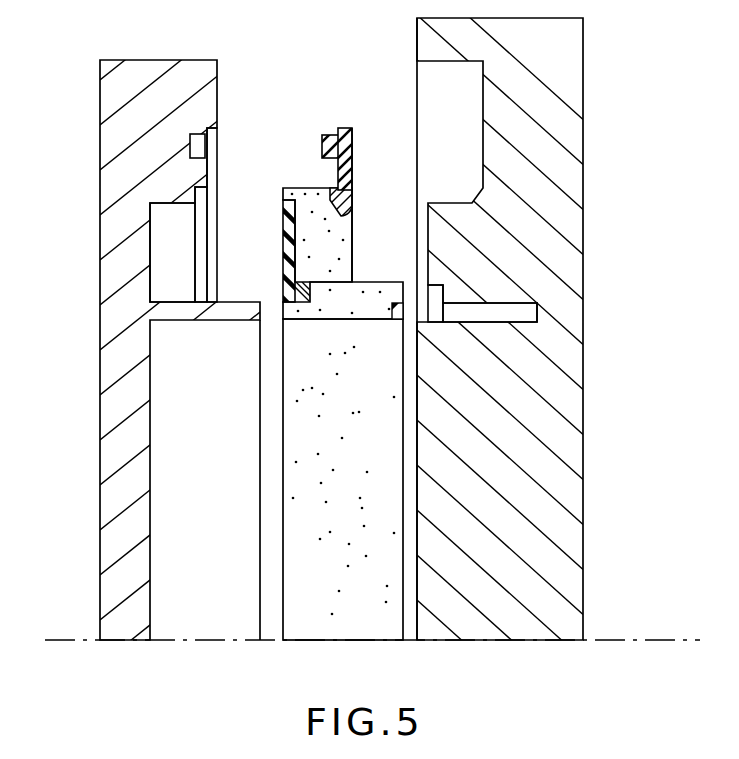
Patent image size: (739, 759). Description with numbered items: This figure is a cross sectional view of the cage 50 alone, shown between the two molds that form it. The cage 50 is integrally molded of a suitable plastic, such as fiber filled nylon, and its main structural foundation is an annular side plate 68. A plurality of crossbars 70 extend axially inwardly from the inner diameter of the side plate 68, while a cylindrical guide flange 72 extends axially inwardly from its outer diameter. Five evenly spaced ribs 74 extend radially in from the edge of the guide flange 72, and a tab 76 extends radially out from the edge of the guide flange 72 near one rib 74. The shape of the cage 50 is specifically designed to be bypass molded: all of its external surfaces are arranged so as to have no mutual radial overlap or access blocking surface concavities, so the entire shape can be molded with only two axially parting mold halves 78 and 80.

The cage 50 is at (290, 175).
The annular side plate 68 is at (283, 226).
The crossbars 70 is at (357, 305).
The cylindrical guide flange 72 is at (308, 188).
The ribs 74 is at (348, 210).
The tab 76 is at (352, 148).
The mold half 78 is at (563, 155).
The mold half 80 is at (115, 182).